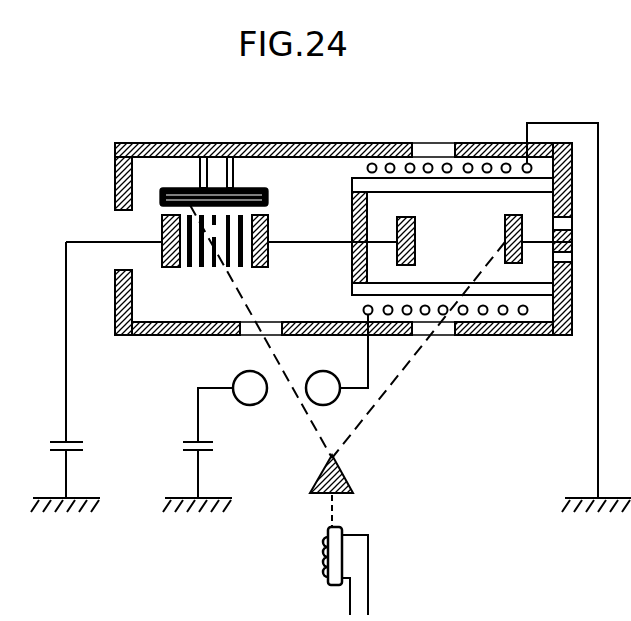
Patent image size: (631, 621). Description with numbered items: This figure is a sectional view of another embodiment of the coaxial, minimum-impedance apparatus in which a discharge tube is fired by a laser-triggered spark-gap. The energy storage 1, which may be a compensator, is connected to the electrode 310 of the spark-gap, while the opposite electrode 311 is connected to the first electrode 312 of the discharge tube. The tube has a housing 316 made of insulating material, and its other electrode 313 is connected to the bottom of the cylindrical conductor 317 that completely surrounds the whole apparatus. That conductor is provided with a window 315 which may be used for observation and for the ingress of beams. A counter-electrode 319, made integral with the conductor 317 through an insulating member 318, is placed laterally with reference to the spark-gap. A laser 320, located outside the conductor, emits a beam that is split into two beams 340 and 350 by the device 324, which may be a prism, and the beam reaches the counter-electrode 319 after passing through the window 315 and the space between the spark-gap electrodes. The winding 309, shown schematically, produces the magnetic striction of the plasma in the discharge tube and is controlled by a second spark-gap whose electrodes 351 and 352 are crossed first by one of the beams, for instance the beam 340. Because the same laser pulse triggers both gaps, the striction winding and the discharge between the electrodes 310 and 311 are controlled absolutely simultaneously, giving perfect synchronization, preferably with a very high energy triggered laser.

The energy storage 1 is at (50, 447).
The winding 309 is at (390, 164).
The electrode 310 is at (162, 233).
The electrode 311 is at (270, 227).
The first electrode 312 is at (417, 256).
The other electrode 313 is at (522, 262).
The window 315 is at (443, 146).
The housing 316 is at (535, 187).
The cylindrical conductor 317 is at (376, 144).
The insulating member 318 is at (202, 172).
The counter-electrode 319 is at (238, 190).
The laser 320 is at (347, 567).
The device 324 is at (388, 497).
The beam 340 is at (277, 366).
The beam 350 is at (405, 375).
The electrode 351 is at (266, 401).
The electrode 352 is at (344, 398).